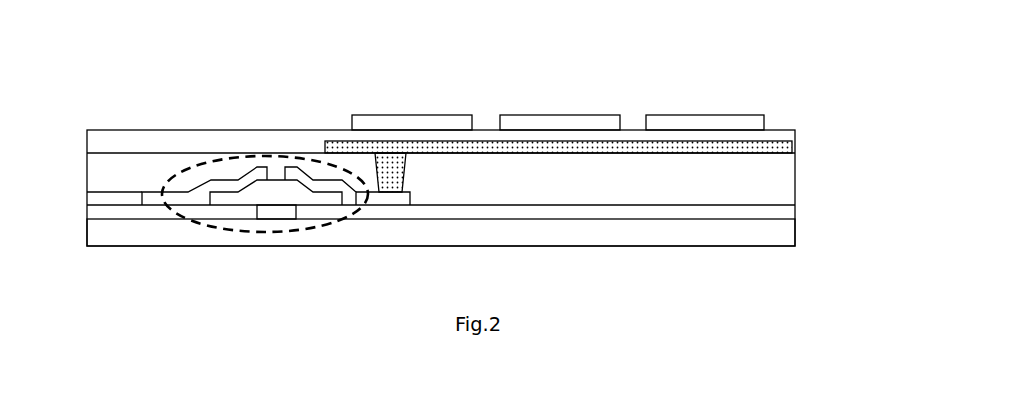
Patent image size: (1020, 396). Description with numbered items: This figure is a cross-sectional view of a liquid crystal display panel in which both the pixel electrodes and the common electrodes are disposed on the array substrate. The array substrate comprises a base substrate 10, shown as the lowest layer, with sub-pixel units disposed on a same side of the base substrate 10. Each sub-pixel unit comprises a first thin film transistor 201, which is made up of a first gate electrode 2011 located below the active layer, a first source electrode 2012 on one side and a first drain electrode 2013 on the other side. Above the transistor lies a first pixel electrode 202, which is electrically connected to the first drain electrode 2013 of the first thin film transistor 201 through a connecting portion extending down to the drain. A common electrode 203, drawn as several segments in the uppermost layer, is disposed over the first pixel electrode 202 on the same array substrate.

The base substrate 10 is at (785, 227).
The first thin film transistor 201 is at (262, 155).
The first gate electrode 2011 is at (273, 214).
The first source electrode 2012 is at (153, 197).
The first drain electrode 2013 is at (354, 196).
The first pixel electrode 202 is at (792, 148).
The common electrode 203 is at (778, 116).